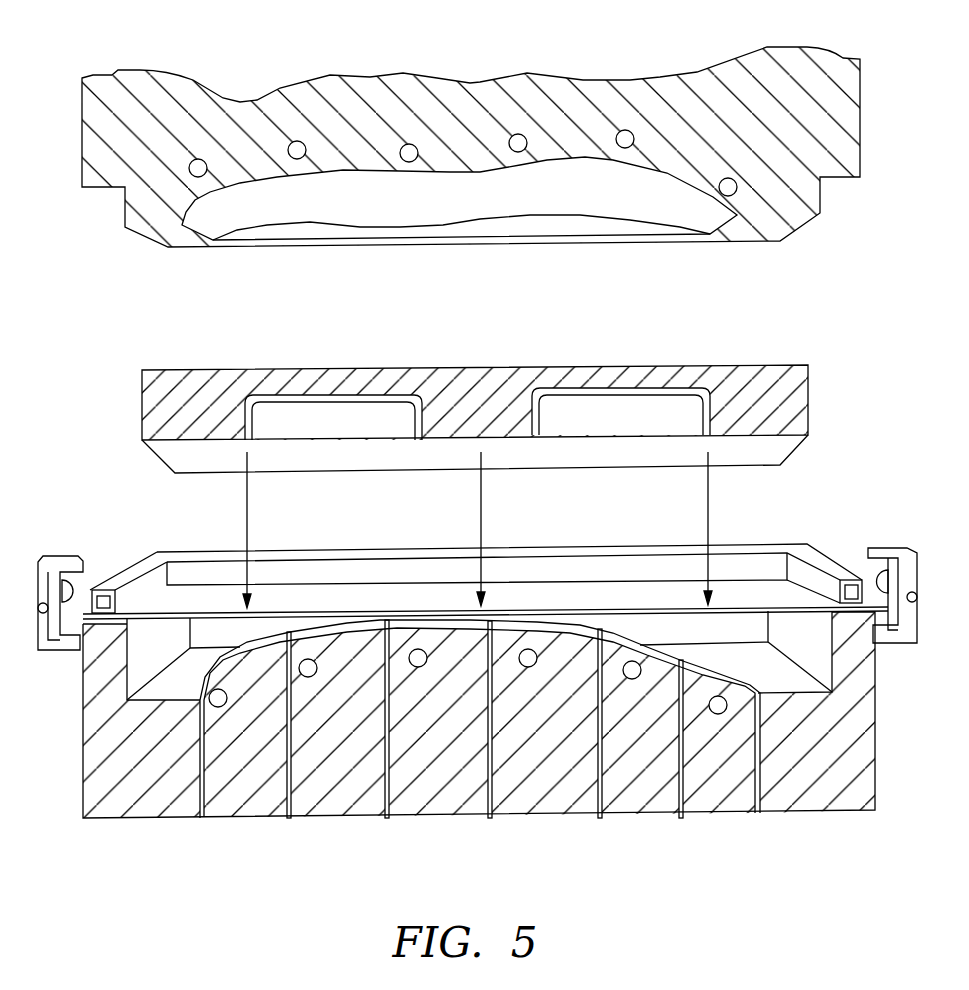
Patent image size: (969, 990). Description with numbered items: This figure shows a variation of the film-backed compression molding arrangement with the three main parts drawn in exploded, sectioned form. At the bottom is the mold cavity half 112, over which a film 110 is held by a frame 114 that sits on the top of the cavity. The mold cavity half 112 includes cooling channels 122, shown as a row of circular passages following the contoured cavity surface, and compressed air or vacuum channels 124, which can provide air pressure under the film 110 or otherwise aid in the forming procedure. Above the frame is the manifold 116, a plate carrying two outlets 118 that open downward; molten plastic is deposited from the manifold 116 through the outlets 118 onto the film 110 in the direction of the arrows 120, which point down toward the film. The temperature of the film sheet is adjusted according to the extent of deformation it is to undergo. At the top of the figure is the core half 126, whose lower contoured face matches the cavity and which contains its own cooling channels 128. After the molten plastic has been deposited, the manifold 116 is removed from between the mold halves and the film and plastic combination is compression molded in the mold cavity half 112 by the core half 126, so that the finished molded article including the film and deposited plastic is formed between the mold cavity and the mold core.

The film 110 is at (760, 580).
The mold cavity half 112 is at (479, 690).
The frame 114 is at (147, 580).
The manifold 116 is at (475, 388).
The outlets 118 is at (247, 418).
The arrows 120 is at (481, 515).
The cooling channels 122 is at (418, 649).
The compressed air or vacuum channels 124 is at (684, 787).
The core half 126 is at (375, 231).
The cooling channels 128 is at (624, 129).